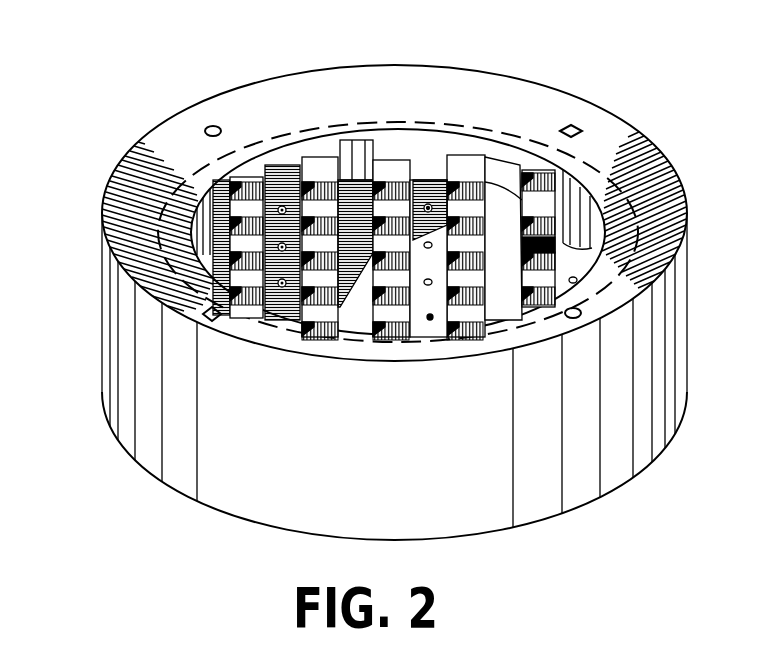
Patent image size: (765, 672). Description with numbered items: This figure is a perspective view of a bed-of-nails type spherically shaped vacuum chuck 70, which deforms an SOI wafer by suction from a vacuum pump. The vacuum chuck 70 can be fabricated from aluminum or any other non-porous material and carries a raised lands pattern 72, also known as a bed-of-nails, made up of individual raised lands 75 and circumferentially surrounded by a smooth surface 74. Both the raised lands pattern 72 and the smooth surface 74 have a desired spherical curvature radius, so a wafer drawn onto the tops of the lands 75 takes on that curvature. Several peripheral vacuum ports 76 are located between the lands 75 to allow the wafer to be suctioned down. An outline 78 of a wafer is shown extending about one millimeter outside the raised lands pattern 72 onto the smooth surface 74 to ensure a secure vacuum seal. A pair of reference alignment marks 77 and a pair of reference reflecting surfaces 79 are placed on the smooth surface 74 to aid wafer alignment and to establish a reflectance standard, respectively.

The spherically shaped vacuum chuck 70 is at (128, 135).
The raised lands pattern 72 is at (427, 158).
The smooth surface 74 is at (362, 97).
The raised lands 75 is at (325, 170).
The peripheral vacuum ports 76 is at (557, 225).
The reference alignment marks 77 is at (207, 305).
The outline of a wafer 78 is at (643, 132).
The reference reflecting surfaces 79 is at (213, 126).